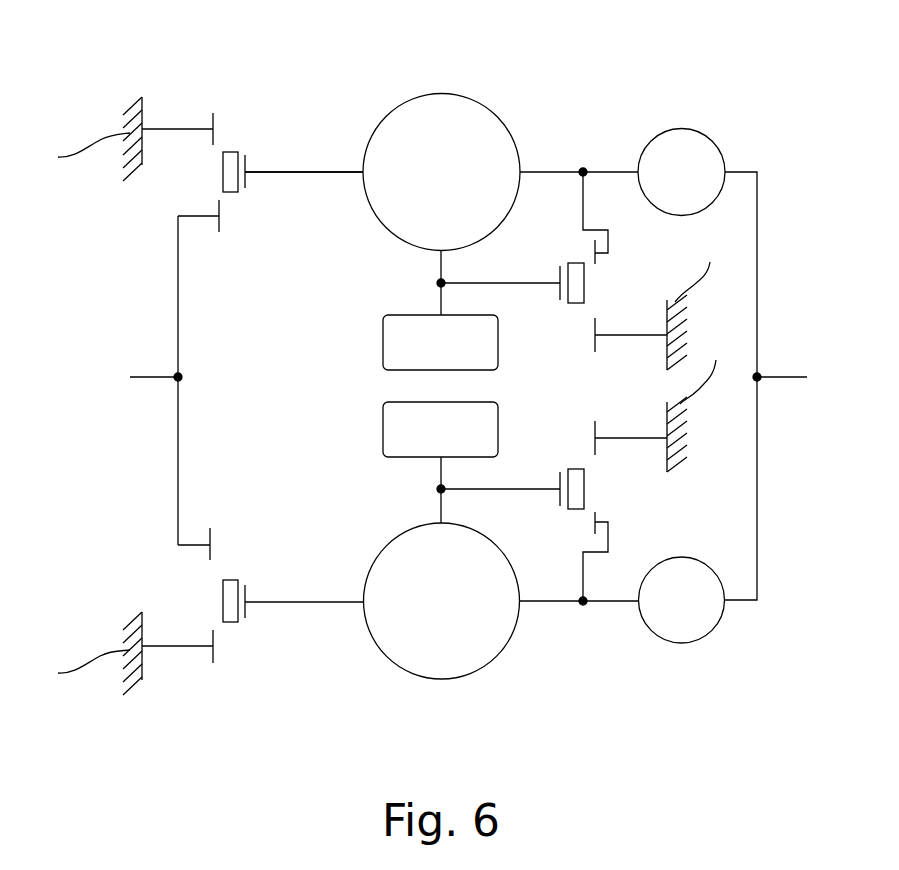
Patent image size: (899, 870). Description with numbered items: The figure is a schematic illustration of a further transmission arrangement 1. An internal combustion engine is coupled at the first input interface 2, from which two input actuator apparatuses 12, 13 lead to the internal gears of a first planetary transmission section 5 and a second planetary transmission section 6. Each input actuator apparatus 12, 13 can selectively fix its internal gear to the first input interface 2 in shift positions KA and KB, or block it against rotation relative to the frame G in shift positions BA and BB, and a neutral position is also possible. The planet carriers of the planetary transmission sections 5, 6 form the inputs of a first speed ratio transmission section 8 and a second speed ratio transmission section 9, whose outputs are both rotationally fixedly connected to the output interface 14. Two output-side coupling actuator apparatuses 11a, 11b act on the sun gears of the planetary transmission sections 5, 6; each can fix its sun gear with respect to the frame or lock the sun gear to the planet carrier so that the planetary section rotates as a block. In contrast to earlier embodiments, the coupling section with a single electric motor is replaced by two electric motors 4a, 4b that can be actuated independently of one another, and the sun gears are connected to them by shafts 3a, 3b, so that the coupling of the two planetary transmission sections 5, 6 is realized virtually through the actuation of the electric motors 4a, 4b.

The transmission arrangement 1 is at (660, 72).
The first input interface 2 is at (176, 379).
The first connecting shaft 3a is at (438, 283).
The second connecting shaft 3b is at (438, 489).
The electric motor 4a is at (383, 340).
The electric motor 4b is at (383, 427).
The first planetary transmission section 5 is at (456, 95).
The second planetary transmission section 6 is at (492, 662).
The first speed ratio transmission section 8 is at (700, 128).
The second speed ratio transmission section 9 is at (707, 636).
The output-side coupling actuator apparatus 11a is at (683, 470).
The output-side coupling actuator apparatus 11b is at (673, 289).
The input actuator apparatus 12 is at (178, 99).
The input actuator apparatus 13 is at (171, 679).
The output interface 14 is at (781, 377).